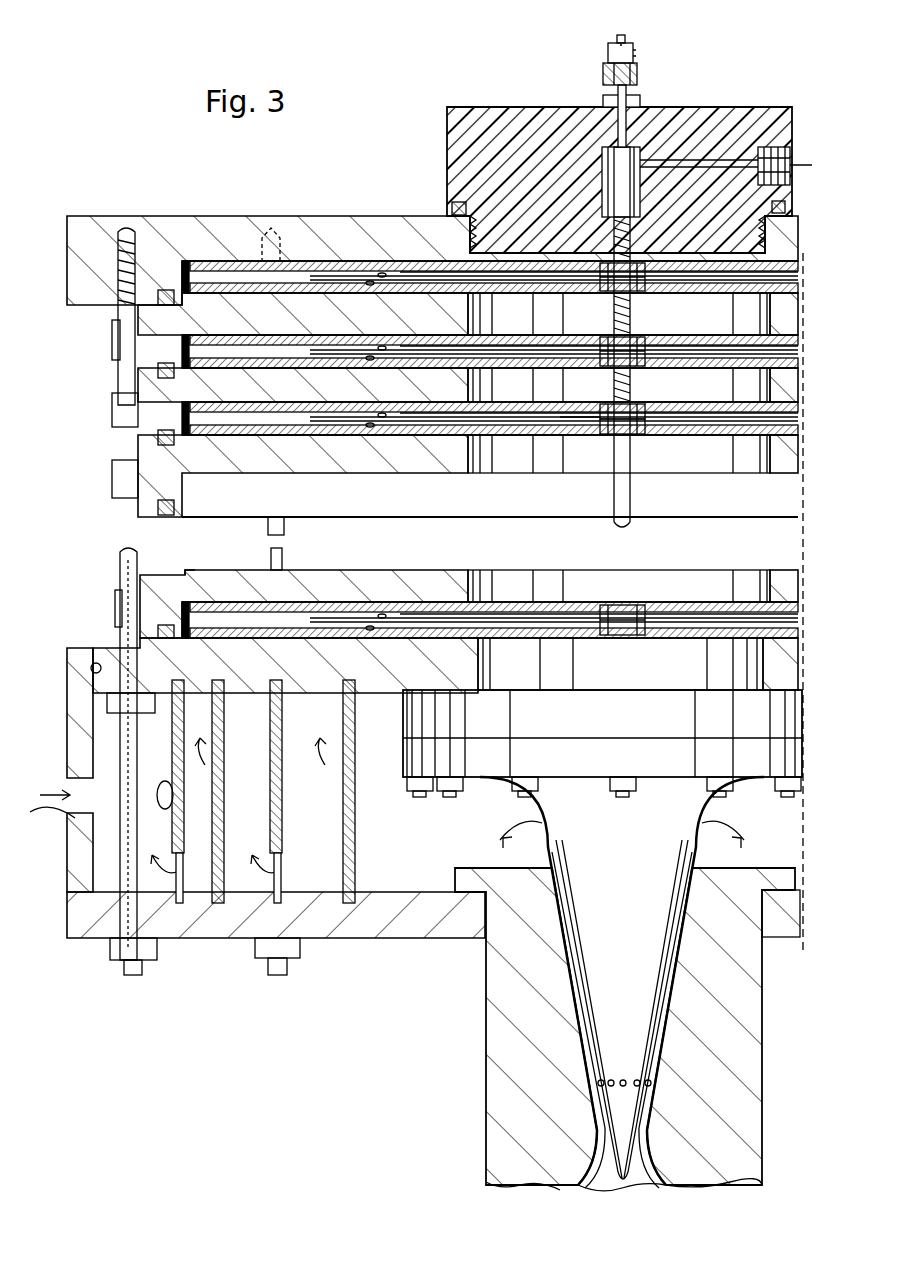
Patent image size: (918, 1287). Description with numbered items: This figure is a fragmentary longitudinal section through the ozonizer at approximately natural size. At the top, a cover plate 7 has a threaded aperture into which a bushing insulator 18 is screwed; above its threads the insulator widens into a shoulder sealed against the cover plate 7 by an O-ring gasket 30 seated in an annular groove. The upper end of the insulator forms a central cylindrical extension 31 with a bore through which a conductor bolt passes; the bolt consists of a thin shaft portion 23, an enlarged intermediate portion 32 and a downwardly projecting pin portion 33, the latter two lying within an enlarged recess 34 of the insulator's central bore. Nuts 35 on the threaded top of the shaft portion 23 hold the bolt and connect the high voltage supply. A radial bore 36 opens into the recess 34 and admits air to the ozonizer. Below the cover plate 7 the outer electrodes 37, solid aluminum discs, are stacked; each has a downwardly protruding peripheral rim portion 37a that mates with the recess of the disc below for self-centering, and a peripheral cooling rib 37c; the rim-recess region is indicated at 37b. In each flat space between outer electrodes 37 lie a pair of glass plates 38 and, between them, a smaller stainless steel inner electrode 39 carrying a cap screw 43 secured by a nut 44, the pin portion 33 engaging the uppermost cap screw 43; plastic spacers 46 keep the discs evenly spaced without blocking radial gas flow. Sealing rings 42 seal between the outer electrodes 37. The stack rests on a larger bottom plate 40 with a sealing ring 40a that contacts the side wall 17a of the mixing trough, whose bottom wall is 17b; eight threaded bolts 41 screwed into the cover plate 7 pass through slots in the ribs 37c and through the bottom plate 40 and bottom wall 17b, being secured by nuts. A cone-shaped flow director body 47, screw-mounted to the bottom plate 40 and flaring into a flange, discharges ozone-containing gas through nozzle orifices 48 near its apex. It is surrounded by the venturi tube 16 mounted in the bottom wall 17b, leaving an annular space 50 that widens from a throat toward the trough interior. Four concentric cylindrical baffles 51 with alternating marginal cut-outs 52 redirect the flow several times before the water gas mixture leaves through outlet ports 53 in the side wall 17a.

The cover plate 7 is at (229, 235).
The venturi tube 16 is at (505, 1085).
The side wall of the mixing trough 17a is at (70, 722).
The bottom wall of the mixing trough 17b is at (384, 925).
The bushing insulator 18 is at (545, 110).
The thin shaft portion 23 is at (608, 60).
The O-ring gasket 30 is at (450, 207).
The central cylindrical extension 31 is at (628, 100).
The intermediate portion 32 is at (618, 150).
The pin portion 33 is at (632, 255).
The enlarged recess 34 is at (604, 190).
The nuts 35 is at (633, 56).
The radial bore 36 is at (732, 160).
The outer electrode 37 is at (410, 468).
The peripheral rim portion 37a is at (150, 502).
The shoulder of distributor block 37b is at (190, 572).
The peripheral cooling rib 37c is at (120, 480).
The glass plates 38 is at (512, 405).
The inner electrode 39 is at (572, 428).
The bottom plate 40 is at (390, 690).
The sealing ring 40a is at (96, 662).
The threaded bolts 41 is at (132, 262).
The sealing rings 42 is at (158, 370).
The cap screw 43 is at (636, 413).
The nut 44 is at (638, 432).
The spacers 46 is at (382, 418).
The flow director body 47 is at (632, 888).
The nozzle orifices 48 is at (635, 1078).
The annular space 50 is at (690, 965).
The cylindrical baffles 51 is at (343, 810).
The marginal cut-outs 52 is at (282, 888).
The outlet ports 53 is at (75, 818).